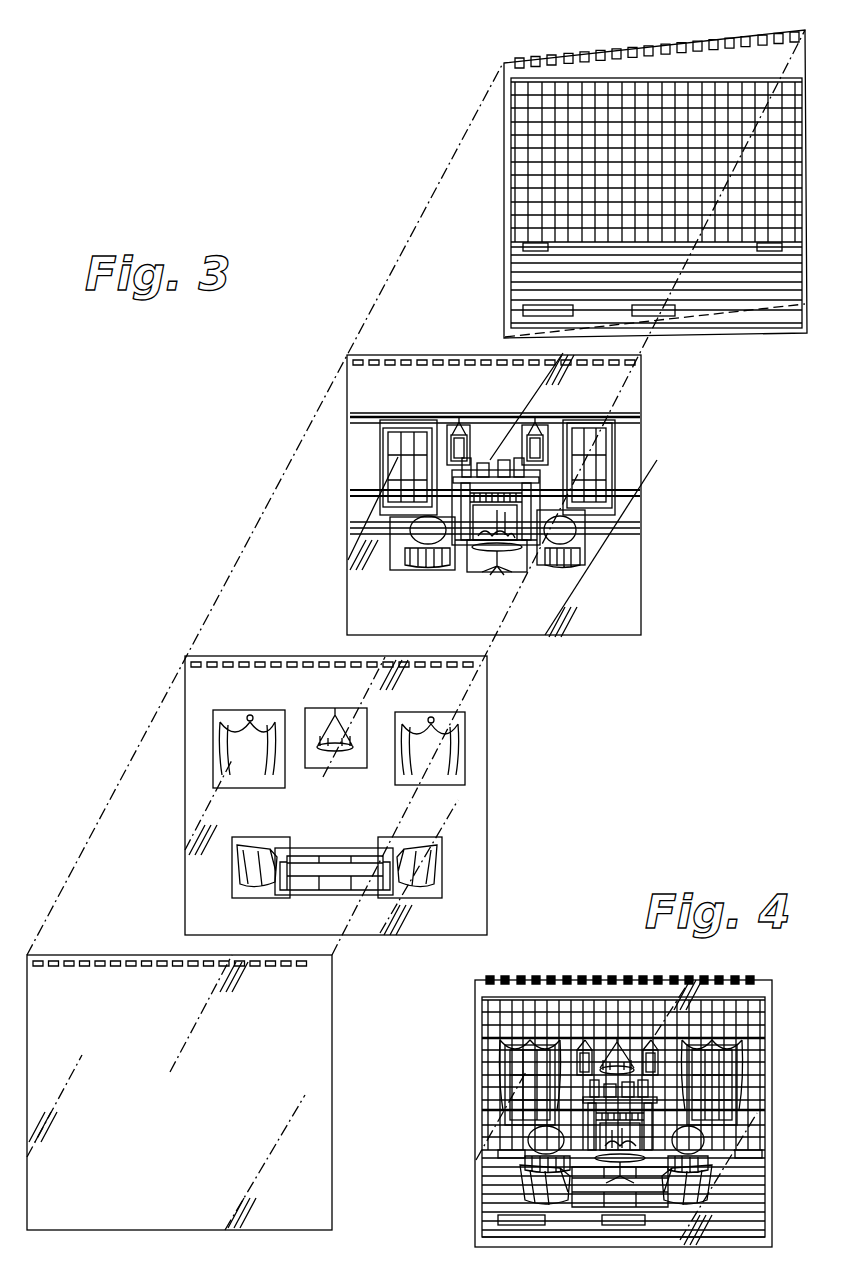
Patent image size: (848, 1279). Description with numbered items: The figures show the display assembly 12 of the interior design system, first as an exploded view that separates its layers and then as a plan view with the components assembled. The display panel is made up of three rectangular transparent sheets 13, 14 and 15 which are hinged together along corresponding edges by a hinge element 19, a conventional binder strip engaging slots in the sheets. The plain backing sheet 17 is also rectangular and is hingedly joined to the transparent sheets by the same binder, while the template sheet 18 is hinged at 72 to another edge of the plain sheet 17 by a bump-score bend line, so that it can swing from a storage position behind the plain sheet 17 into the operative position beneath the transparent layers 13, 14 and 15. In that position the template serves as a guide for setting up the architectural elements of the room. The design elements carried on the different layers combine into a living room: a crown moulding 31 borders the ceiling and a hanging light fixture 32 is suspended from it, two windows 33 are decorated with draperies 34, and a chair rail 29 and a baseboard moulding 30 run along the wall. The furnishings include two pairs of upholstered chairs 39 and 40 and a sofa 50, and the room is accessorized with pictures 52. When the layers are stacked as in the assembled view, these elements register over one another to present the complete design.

In FIG. 3, the display assembly 12 is at (300, 438).
In FIG. 4, the display assembly 12 is at (478, 1165).
In FIG. 3, the transparent layer 13 is at (520, 496).
In FIG. 3, the transparent layer 14 is at (354, 816).
In FIG. 3, the transparent layer 15 is at (322, 1070).
In FIG. 4, the transparent layer 15 is at (768, 1003).
In FIG. 3, the plain backing sheet 17 is at (647, 210).
In FIG. 3, the template sheet 18 is at (763, 333).
In FIG. 4, the template sheet 18 is at (760, 1212).
In FIG. 3, the hinge element 19 is at (457, 357).
In FIG. 4, the hinge element 19 is at (535, 980).
In FIG. 3, the chair rail 29 is at (612, 657).
In FIG. 3, the baseboard moulding 30 is at (632, 537).
In FIG. 3, the crown moulding 31 is at (627, 417).
In FIG. 3, the hanging light fixture 32 is at (347, 752).
In FIG. 3, the window 33 is at (610, 449).
In FIG. 3, the draperies 34 is at (262, 762).
In FIG. 3, the upholstered chairs 39 is at (433, 572).
In FIG. 3, the upholstered chairs 40 is at (257, 877).
In FIG. 3, the sofa 50 is at (328, 882).
In FIG. 3, the pictures 52 is at (457, 430).
In FIG. 3, the hinge 72 is at (505, 247).
In FIG. 4, the hinge 72 is at (478, 1050).